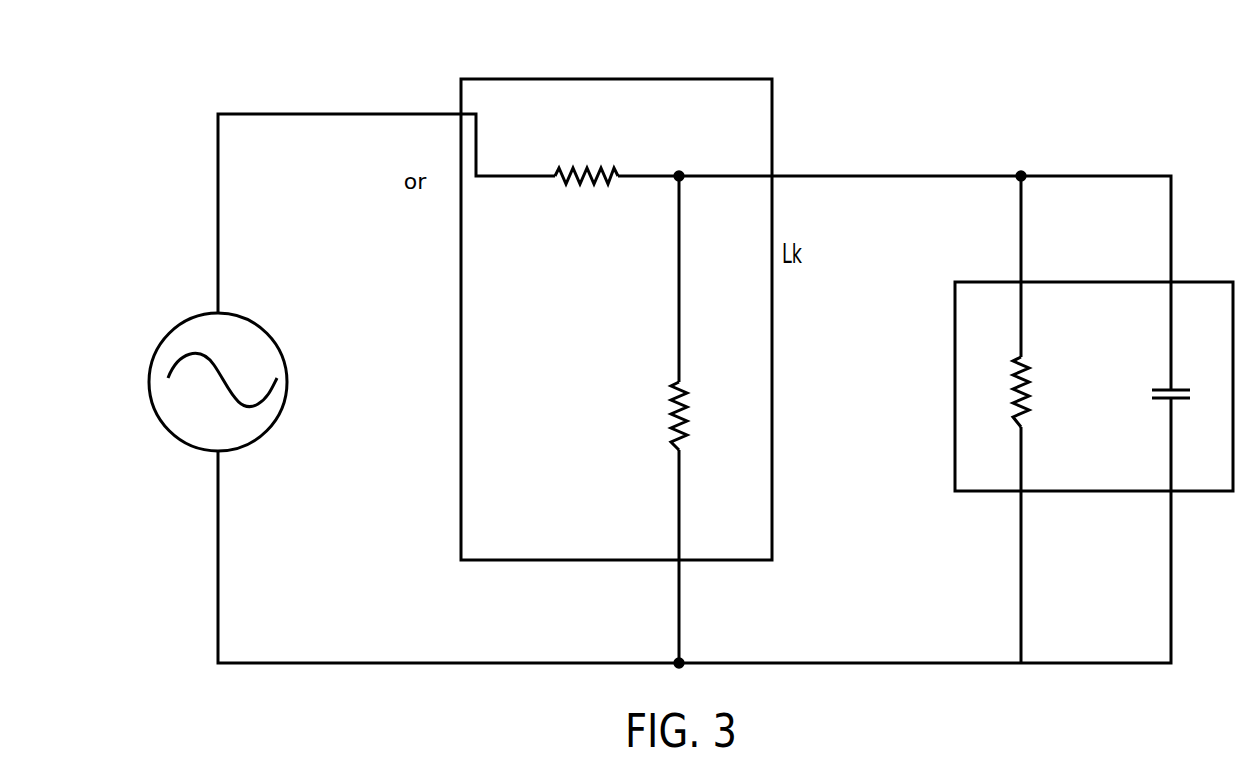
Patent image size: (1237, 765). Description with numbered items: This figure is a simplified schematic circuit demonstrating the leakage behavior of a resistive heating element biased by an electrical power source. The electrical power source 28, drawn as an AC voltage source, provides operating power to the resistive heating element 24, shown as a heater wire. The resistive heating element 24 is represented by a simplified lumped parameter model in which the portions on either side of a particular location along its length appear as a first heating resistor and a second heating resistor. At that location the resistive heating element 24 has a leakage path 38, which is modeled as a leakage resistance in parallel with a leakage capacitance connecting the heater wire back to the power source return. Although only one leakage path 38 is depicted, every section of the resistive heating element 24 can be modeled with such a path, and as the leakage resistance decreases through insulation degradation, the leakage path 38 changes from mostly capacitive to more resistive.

The resistive heating element 24 is at (613, 89).
The electrical power source 28 is at (162, 430).
The leakage path 38 is at (1092, 299).